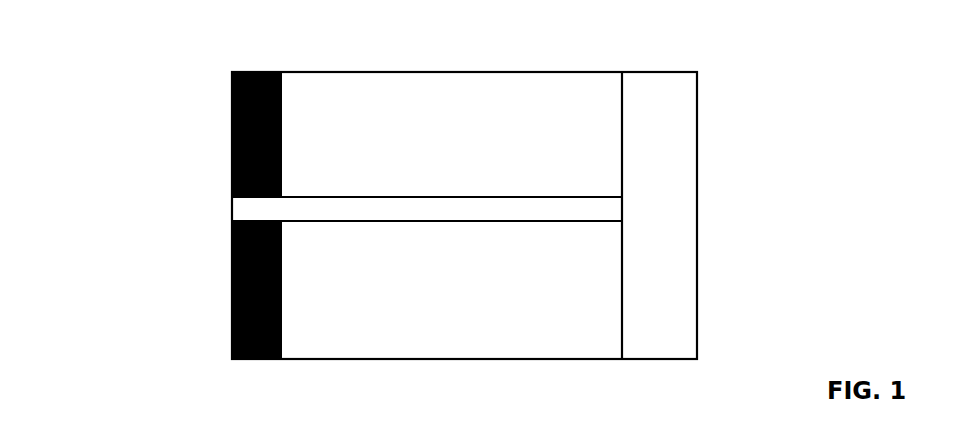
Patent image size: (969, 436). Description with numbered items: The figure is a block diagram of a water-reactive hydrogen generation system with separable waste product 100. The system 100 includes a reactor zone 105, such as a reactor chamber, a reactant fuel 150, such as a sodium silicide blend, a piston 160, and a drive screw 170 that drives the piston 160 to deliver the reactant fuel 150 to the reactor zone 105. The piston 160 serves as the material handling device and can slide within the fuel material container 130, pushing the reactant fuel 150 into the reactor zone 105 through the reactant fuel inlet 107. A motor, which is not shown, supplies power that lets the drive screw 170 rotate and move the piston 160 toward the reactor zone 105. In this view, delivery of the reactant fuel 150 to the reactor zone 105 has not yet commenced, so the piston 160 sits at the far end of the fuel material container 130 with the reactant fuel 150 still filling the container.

The hydrogen generation system with separable waste product 100 is at (122, 44).
The reactor zone 105 is at (673, 97).
The reactant fuel inlet 107 is at (623, 374).
The fuel material container 130 is at (293, 362).
The reactant fuel 150 is at (573, 333).
The piston 160 is at (232, 117).
The drive screw 170 is at (608, 208).